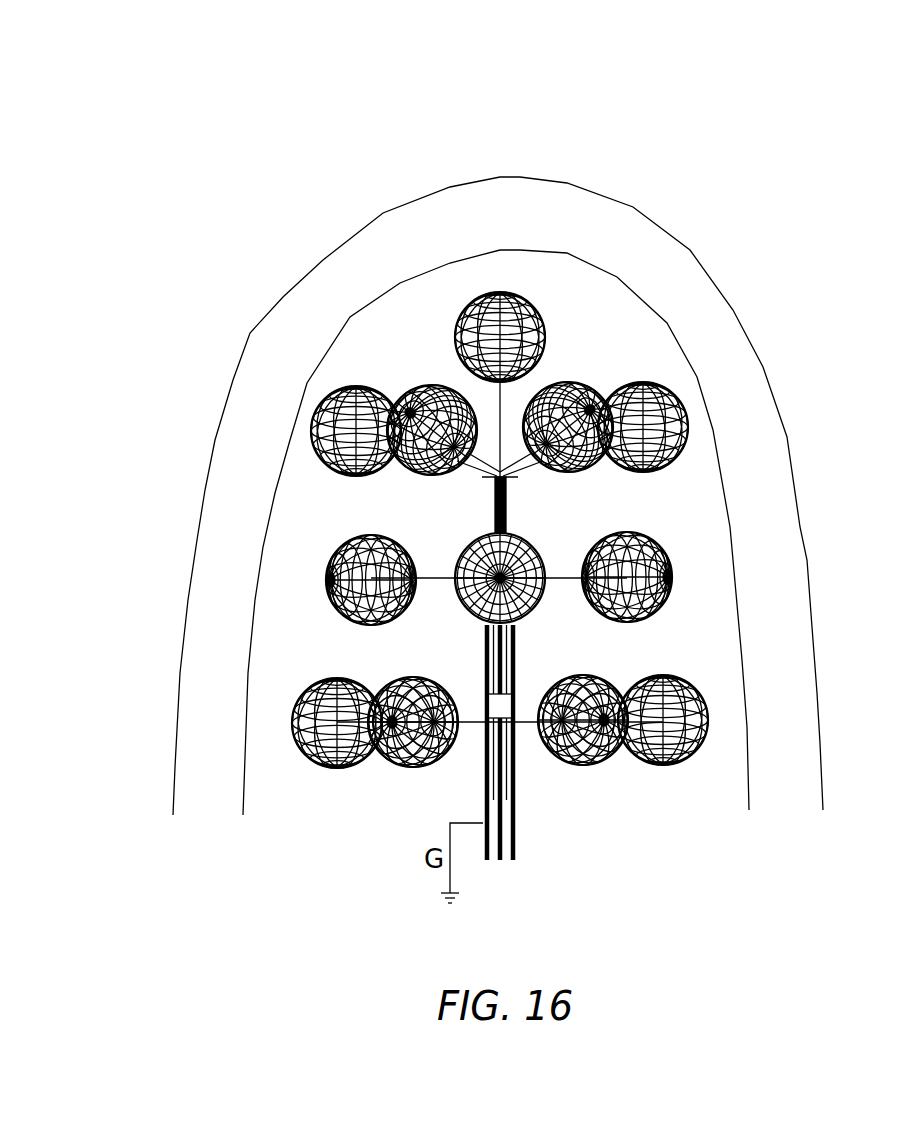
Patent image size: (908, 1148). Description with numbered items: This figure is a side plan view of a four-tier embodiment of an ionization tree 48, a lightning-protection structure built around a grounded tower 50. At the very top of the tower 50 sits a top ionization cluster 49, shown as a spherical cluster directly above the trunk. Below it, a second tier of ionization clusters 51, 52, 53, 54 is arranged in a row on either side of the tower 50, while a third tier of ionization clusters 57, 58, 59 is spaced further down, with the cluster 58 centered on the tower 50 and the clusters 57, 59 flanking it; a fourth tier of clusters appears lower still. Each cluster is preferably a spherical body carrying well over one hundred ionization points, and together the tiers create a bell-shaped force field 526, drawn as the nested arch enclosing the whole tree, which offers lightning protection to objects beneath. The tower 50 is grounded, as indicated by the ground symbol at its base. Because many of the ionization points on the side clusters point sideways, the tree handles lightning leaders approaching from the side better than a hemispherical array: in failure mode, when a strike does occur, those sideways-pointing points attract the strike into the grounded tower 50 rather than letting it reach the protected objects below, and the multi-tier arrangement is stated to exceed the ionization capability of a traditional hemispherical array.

The force field 526 is at (668, 265).
The electrode array assembly 48 is at (424, 359).
The top ionization cluster 49 is at (528, 297).
The second tier ionization cluster 51 is at (327, 467).
The second tier ionization cluster 52 is at (428, 475).
The second tier ionization cluster 53 is at (568, 478).
The second tier ionization cluster 54 is at (684, 432).
The third tier ionization cluster 57 is at (358, 625).
The third tier ionization cluster 58 is at (535, 605).
The third tier ionization cluster 59 is at (668, 592).
The tower 50 is at (517, 822).